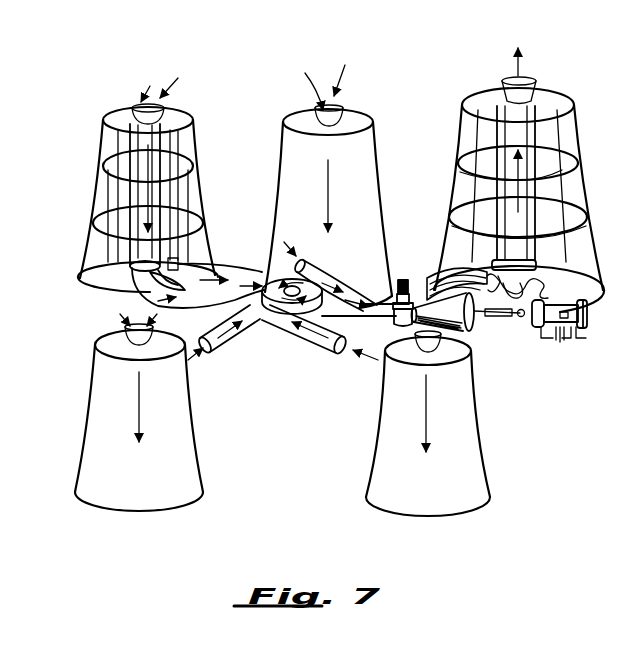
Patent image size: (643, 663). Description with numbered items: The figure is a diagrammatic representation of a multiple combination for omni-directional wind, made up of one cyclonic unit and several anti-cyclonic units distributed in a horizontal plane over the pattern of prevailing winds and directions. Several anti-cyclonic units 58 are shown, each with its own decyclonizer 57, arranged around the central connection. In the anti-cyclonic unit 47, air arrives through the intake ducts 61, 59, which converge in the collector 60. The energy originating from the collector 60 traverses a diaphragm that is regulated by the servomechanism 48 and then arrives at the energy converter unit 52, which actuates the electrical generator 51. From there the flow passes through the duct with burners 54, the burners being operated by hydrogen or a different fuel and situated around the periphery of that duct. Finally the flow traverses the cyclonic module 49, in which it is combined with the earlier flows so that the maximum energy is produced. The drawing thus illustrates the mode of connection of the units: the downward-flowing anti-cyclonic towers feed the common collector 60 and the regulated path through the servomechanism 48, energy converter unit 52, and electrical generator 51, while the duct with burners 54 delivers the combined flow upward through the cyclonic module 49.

The anti-cyclonic unit 47 is at (378, 167).
The servomechanism 48 is at (405, 278).
The cyclonic module 49 is at (575, 184).
The electrical generator 51 is at (588, 322).
The energy converter unit 52 is at (458, 327).
The duct with burners 54 is at (540, 290).
The decyclonizer 57 is at (150, 307).
The anti-cyclonic unit 58 is at (186, 140).
The intake duct 59 is at (318, 342).
The collector 60 is at (266, 320).
The intake duct 61 is at (223, 352).